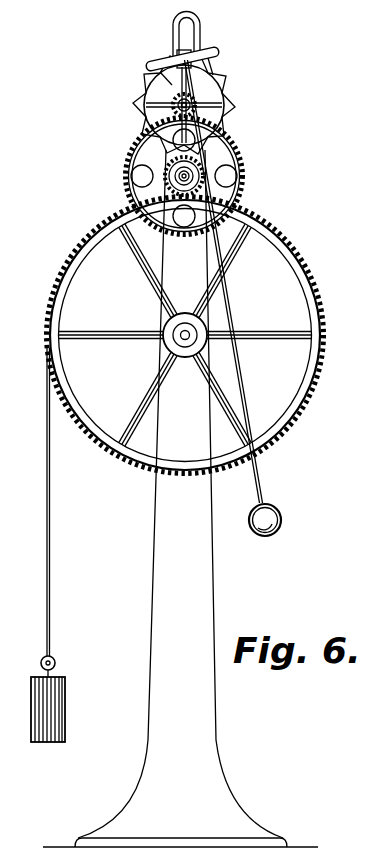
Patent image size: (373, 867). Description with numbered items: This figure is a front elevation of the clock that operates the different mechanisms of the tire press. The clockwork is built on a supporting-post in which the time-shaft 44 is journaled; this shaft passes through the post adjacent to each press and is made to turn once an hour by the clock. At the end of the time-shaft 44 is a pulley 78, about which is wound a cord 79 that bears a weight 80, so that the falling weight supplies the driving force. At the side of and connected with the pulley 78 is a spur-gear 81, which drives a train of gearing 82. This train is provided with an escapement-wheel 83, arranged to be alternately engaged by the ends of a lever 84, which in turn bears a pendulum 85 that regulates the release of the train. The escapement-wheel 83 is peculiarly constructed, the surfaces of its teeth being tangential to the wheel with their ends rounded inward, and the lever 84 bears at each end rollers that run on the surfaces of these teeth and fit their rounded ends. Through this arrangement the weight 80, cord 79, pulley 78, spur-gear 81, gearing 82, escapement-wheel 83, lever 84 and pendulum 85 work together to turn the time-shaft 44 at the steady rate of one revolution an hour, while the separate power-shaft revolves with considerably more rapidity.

The time-shaft 44 is at (166, 341).
The pulley 78 is at (185, 335).
The cord 79 is at (61, 512).
The weight 80 is at (65, 709).
The spur-gear 81 is at (204, 335).
The train of gearing 82 is at (203, 176).
The escapement-wheel 83 is at (204, 105).
The lever 84 is at (207, 258).
The pendulum 85 is at (272, 506).